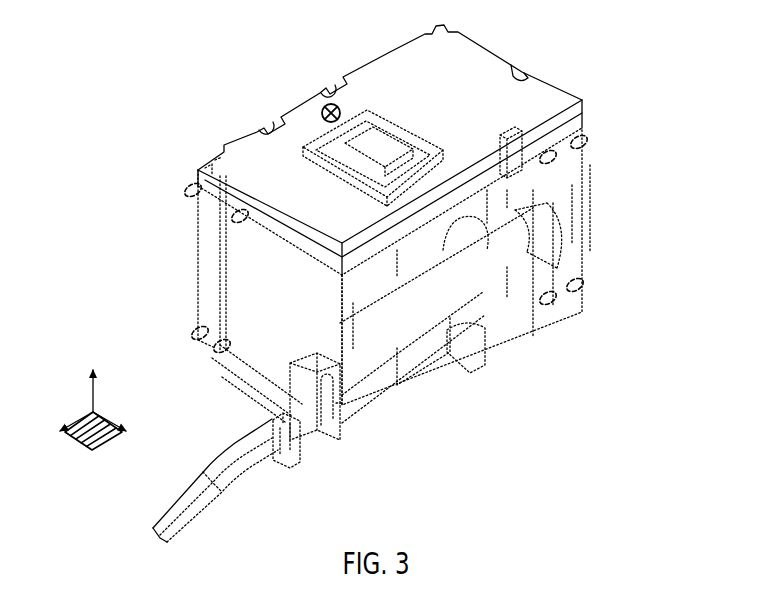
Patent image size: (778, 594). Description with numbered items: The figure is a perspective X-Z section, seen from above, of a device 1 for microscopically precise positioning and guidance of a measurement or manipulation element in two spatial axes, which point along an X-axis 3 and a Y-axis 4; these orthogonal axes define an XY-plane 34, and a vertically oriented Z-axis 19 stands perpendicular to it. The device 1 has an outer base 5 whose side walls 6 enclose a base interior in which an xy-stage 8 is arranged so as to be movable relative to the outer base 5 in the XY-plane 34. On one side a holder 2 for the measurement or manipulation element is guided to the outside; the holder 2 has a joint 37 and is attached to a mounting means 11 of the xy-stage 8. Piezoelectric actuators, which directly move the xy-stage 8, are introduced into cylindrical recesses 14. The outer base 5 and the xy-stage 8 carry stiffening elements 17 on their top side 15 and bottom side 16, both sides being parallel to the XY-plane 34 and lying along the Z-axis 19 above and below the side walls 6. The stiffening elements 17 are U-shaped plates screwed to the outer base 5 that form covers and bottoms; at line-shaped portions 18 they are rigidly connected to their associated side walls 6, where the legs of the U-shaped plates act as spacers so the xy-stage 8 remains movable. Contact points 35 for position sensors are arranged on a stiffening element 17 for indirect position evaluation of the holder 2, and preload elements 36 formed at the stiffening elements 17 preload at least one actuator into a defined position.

The device 1 is at (641, 31).
The holder 2 is at (240, 512).
The X-axis 3 is at (63, 430).
The Y-axis 4 is at (104, 428).
The outer base 5 is at (575, 268).
The side walls 6 is at (205, 321).
The xy-stage 8 is at (240, 305).
The mounting means 11 is at (340, 410).
The cylindrical recesses 14 is at (547, 225).
The top side 15 is at (290, 92).
The bottom side 16 is at (482, 377).
The stiffening elements 17 is at (293, 240).
The line-shaped portions 18 is at (240, 220).
The Z-axis 19 is at (88, 383).
The XY-plane 34 is at (83, 451).
The contact points 35 is at (337, 104).
The preload elements 36 is at (512, 155).
The joint 37 is at (295, 473).